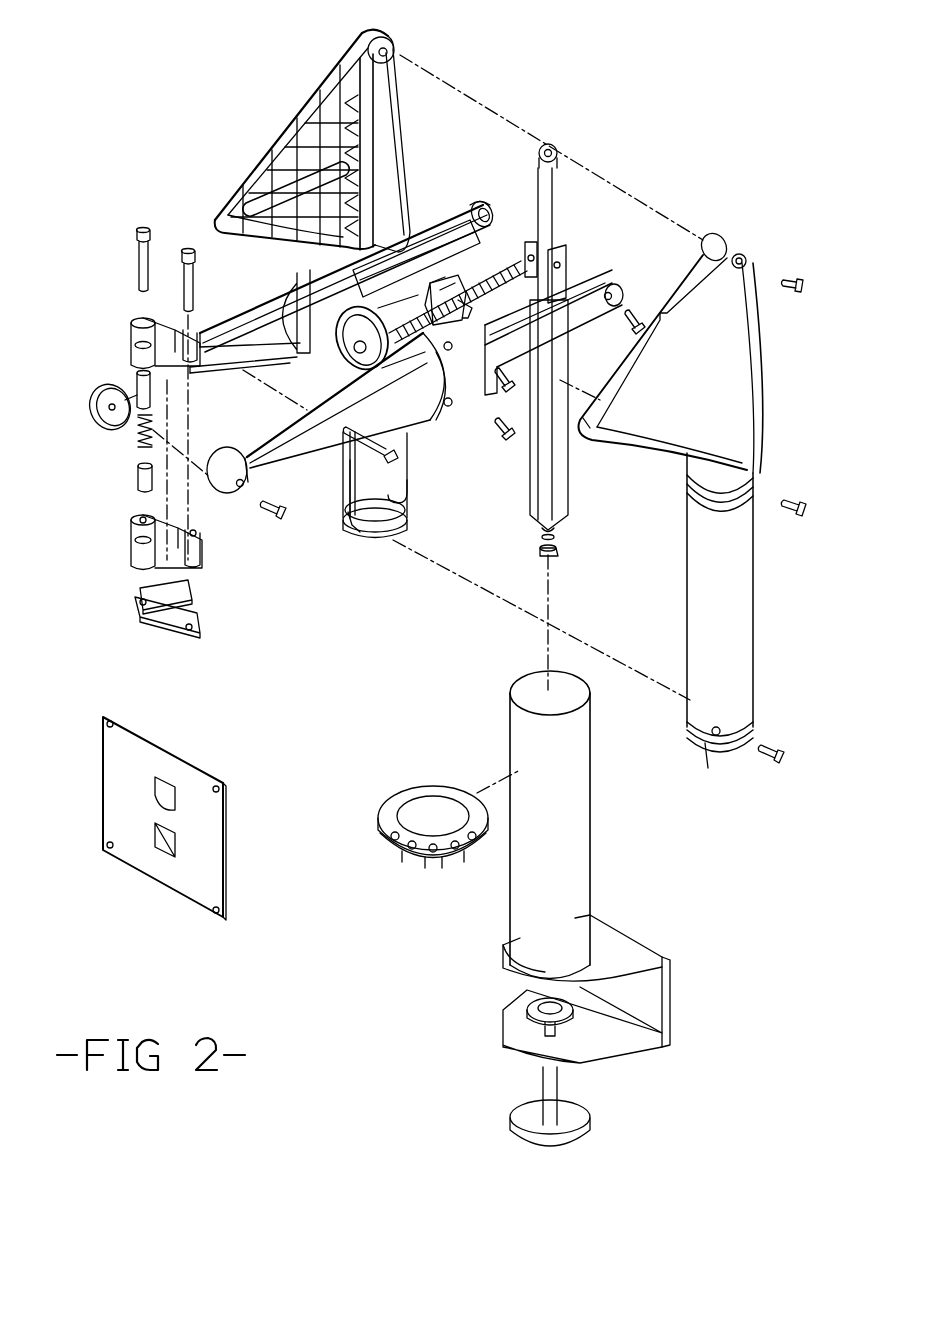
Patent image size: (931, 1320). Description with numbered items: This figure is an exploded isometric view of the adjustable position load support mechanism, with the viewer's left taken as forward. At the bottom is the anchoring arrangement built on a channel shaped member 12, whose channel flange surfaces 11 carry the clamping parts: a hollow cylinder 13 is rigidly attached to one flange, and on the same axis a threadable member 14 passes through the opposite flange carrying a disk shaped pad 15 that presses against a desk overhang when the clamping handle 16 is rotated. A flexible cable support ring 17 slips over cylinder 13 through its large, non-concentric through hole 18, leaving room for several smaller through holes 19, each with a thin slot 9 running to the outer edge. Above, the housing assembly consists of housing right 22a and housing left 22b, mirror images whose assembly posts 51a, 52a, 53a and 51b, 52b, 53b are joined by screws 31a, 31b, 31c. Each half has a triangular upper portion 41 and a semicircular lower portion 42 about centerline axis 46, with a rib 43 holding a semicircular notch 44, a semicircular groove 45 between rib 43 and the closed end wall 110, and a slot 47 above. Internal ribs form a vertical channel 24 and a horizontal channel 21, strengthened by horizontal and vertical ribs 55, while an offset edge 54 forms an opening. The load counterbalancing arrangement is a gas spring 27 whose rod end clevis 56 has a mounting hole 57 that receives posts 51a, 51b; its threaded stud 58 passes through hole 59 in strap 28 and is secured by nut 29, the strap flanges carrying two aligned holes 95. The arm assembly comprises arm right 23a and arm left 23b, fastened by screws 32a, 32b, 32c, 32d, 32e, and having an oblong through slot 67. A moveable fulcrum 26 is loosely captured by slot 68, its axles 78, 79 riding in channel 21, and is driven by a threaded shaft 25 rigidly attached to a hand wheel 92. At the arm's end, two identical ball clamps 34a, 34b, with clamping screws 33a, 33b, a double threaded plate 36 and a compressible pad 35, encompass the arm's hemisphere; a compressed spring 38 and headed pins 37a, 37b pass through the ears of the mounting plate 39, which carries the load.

The thin slot 9 is at (428, 853).
The clamp bracket 11 is at (640, 935).
The channel shaped member 12 is at (672, 1002).
The hollow cylinder 13 is at (515, 920).
The threadable member 14 is at (546, 1090).
The disk shaped pad 15 is at (530, 1030).
The clamping handle 16 is at (580, 1115).
The cable support ring 17 is at (380, 823).
The large through hole 18 is at (393, 805).
The smaller through holes 19 is at (398, 840).
The horizontally oriented channel 21 is at (275, 178).
The housing right 22a is at (393, 42).
The housing left 22b is at (735, 240).
The arm right 23a is at (487, 206).
The arm left 23b is at (615, 287).
The vertically oriented channel 24 is at (385, 130).
The threaded shaft 25 is at (465, 288).
The moveable fulcrum 26 is at (446, 298).
The gas spring 27 is at (540, 470).
The strap 28 is at (530, 517).
The nut 29 is at (540, 555).
The screw 31a is at (802, 284).
The screw 31b is at (806, 507).
The screw 31c is at (786, 755).
The screw 32a is at (640, 318).
The screw 32b is at (468, 370).
The screw 32c is at (505, 436).
The screw 32d is at (398, 440).
The screw 32e is at (280, 515).
The clamping screw 33a is at (185, 248).
The clamping screw 33b is at (138, 228).
The ball clamp 34a is at (135, 315).
The ball clamp 34b is at (165, 560).
The compressible pad 35 is at (160, 597).
The double threaded plate 36 is at (150, 622).
The headed pin 37a is at (135, 385).
The headed pin 37b is at (140, 483).
The compressed spring 38 is at (143, 430).
The mounting plate 39 is at (198, 892).
The upper portion 41 is at (732, 393).
The lower portion 42 is at (350, 480).
The rib 43 is at (362, 548).
The semicircular notch 44 is at (370, 548).
The semicircular groove 45 is at (690, 733).
The centerline axis 46 is at (350, 500).
The slot 47 is at (407, 498).
The assembly post 51a is at (397, 55).
The assembly post 51b is at (748, 257).
The assembly post 52a is at (340, 263).
The assembly post 52b is at (755, 482).
The assembly post 53a is at (350, 533).
The assembly post 53b is at (708, 748).
The edge 54 is at (313, 127).
The horizontal and vertical ribs 55 is at (382, 88).
The rod end clevis 56 is at (552, 150).
The mounting hole 57 is at (555, 155).
The threaded stud 58 is at (543, 537).
The hole 59 is at (555, 525).
The oblong through slot 67 is at (450, 406).
The slot 68 is at (422, 268).
The axle 78 is at (430, 272).
The axle 79 is at (432, 282).
The hand wheel 92 is at (348, 360).
The holes 95 is at (553, 275).
The closed end wall 110 is at (408, 532).